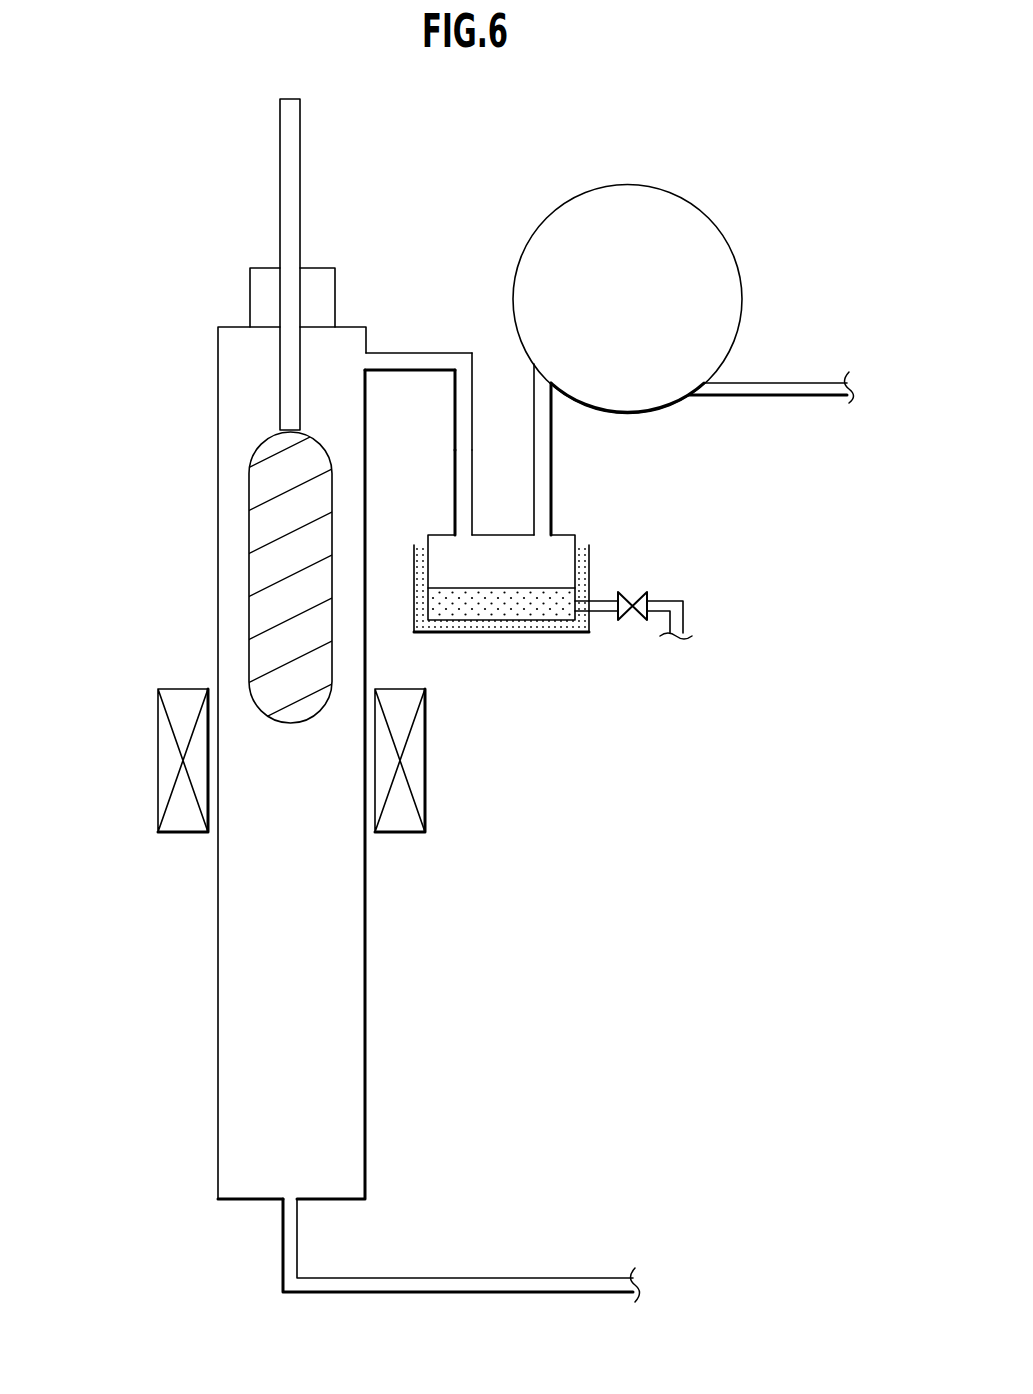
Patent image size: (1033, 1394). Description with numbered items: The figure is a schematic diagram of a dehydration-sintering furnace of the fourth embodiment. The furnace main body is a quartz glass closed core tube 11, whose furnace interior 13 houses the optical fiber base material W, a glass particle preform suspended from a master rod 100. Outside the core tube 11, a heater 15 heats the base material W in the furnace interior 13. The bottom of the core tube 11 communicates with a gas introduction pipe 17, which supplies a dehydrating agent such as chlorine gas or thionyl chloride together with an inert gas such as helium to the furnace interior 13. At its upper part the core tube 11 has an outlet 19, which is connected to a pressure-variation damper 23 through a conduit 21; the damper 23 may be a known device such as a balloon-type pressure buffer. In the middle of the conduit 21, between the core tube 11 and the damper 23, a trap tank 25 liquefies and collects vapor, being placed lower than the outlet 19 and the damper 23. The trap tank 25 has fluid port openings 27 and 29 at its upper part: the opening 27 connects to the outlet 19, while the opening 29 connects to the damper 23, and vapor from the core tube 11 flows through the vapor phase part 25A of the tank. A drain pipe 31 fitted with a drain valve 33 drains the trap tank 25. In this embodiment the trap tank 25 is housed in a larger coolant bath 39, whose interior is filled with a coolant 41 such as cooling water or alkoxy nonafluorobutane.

The master rod 100 is at (293, 203).
The outlet 19 is at (363, 362).
The conduit 21 is at (460, 414).
The fluid port opening 27 is at (462, 533).
The fluid port opening 29 is at (540, 533).
The pressure-variation damper 23 is at (714, 216).
The vapor phase part 25A is at (565, 545).
The trap tank 25 is at (543, 578).
The drain valve 33 is at (631, 595).
The drain pipe 31 is at (665, 605).
The coolant 41 is at (474, 632).
The coolant bath 39 is at (541, 632).
The optical fiber base material W is at (273, 583).
The heater 15 is at (417, 763).
The core tube 11 is at (369, 970).
The furnace interior 13 is at (355, 1072).
The gas introduction pipe 17 is at (528, 1283).